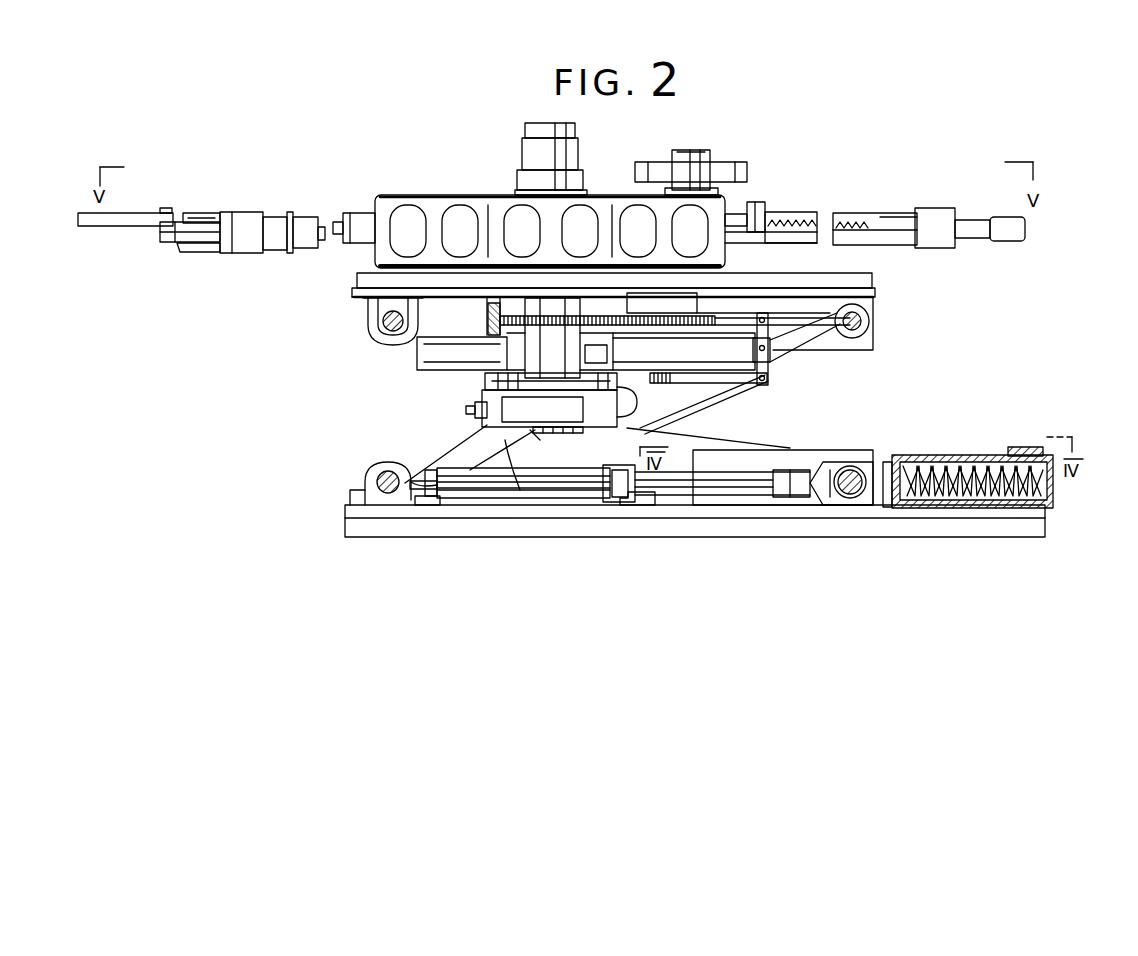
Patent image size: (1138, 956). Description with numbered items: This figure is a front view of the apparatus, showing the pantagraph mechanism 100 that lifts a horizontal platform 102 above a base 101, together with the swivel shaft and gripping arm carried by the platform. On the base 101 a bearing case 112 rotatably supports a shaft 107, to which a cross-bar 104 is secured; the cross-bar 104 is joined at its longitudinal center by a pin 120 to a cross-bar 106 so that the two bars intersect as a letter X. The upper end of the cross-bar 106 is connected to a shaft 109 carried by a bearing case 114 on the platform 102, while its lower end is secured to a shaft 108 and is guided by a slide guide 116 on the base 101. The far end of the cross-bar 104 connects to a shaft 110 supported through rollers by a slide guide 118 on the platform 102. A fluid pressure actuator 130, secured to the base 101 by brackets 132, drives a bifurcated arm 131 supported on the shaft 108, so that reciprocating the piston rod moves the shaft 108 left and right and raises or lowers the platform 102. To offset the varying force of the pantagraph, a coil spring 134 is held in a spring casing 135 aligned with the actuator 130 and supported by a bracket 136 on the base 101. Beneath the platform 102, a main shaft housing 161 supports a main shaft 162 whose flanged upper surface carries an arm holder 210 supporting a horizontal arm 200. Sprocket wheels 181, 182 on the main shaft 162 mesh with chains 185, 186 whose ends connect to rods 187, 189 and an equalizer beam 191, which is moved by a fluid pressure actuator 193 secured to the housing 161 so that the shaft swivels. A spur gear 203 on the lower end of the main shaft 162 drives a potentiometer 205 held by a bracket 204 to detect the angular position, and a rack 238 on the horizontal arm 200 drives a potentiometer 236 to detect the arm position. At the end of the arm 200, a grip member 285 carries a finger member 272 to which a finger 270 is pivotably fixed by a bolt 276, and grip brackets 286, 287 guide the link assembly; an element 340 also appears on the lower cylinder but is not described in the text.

The pantagraph mechanism 100 is at (912, 402).
The base 101 is at (755, 525).
The horizontal platform 102 is at (873, 276).
The cross-bar 104 is at (822, 345).
The cross-bar 106 is at (782, 450).
The shaft 107 is at (377, 482).
The shaft 108 is at (850, 505).
The shaft 109 is at (385, 340).
The shaft 110 is at (870, 320).
The bearing case 112 is at (360, 498).
The bearing case 114 is at (375, 322).
The slide guide 116 is at (852, 462).
The slide guide 118 is at (870, 345).
The pin 120 is at (605, 420).
The fluid pressure actuator 130 is at (548, 500).
The bifurcated arm 131 is at (840, 500).
The bracket 132 is at (420, 505).
The coil spring 134 is at (960, 507).
The spring casing 135 is at (1045, 492).
The bracket 136 is at (1030, 437).
The main shaft housing 161 is at (487, 312).
The main shaft 162 is at (500, 385).
The sprocket wheel 181 is at (520, 370).
The sprocket wheel 182 is at (495, 410).
The chain 185 is at (638, 318).
The chain 186 is at (685, 390).
The rod 187 is at (688, 298).
The rod 189 is at (760, 385).
The equalizer beam 191 is at (770, 378).
The fluid pressure actuator 193 is at (417, 364).
The horizontal arm 200 is at (885, 215).
The spur gear 203 is at (535, 445).
The bracket 204 is at (520, 497).
The potentiometer 205 is at (500, 497).
The arm holder 210 is at (372, 262).
The potentiometer 236 is at (757, 212).
The rack 238 is at (800, 225).
The finger 270 is at (125, 222).
The finger member 272 is at (178, 243).
The bolt 276 is at (180, 196).
The grip member 285 is at (250, 253).
The grip bracket 286 is at (205, 213).
The grip bracket 287 is at (210, 252).
The end cap 340 is at (618, 502).